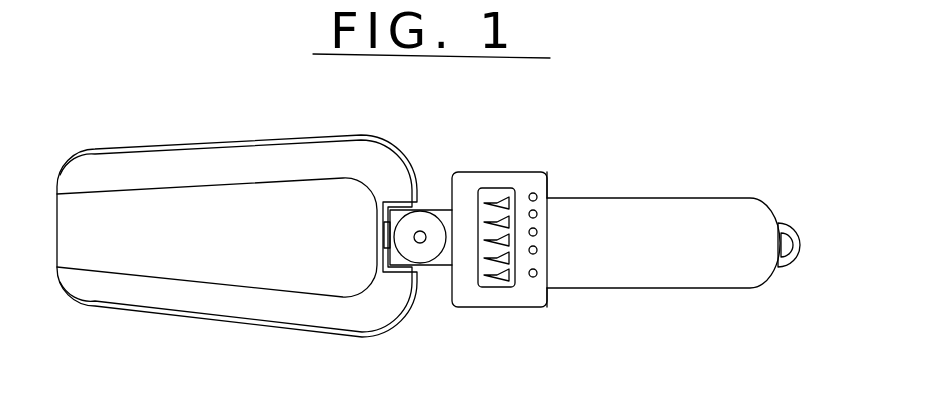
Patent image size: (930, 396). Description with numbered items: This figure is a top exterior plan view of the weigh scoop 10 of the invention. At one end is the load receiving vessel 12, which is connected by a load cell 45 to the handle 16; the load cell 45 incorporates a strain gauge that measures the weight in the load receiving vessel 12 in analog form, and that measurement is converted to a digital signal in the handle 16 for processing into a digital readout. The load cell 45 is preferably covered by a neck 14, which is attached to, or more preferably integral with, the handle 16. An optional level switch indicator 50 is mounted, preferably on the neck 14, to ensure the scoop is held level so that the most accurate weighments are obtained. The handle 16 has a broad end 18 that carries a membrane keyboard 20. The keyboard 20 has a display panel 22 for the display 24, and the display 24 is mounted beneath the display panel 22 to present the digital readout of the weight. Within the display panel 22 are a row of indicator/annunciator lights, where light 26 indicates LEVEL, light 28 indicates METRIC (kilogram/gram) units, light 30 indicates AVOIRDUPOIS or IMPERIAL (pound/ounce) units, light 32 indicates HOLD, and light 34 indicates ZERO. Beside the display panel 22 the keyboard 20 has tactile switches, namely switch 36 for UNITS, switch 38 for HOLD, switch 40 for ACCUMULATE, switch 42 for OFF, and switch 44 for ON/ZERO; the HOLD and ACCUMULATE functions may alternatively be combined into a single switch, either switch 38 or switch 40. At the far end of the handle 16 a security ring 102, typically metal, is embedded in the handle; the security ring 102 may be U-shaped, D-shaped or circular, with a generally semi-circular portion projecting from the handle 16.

The weigh scoop 10 is at (620, 158).
The load receiving vessel 12 is at (222, 245).
The neck 14 is at (430, 207).
The handle 16 is at (660, 262).
The broad end 18 is at (497, 308).
The membrane keyboard 20 is at (537, 180).
The display panel 22 is at (512, 287).
The display 24 is at (484, 285).
The indicator/annunciator light 26 is at (486, 203).
The indicator/annunciator light 28 is at (486, 222).
The indicator/annunciator light 30 is at (486, 240).
The indicator/annunciator light 32 is at (486, 258).
The indicator/annunciator light 34 is at (486, 275).
The switch 36 is at (537, 197).
The switch 38 is at (537, 214).
The switch 40 is at (537, 232).
The switch 42 is at (537, 250).
The switch 44 is at (537, 273).
The load cell 45 is at (391, 245).
The level switch indicator 50 is at (425, 260).
The security ring 102 is at (783, 217).